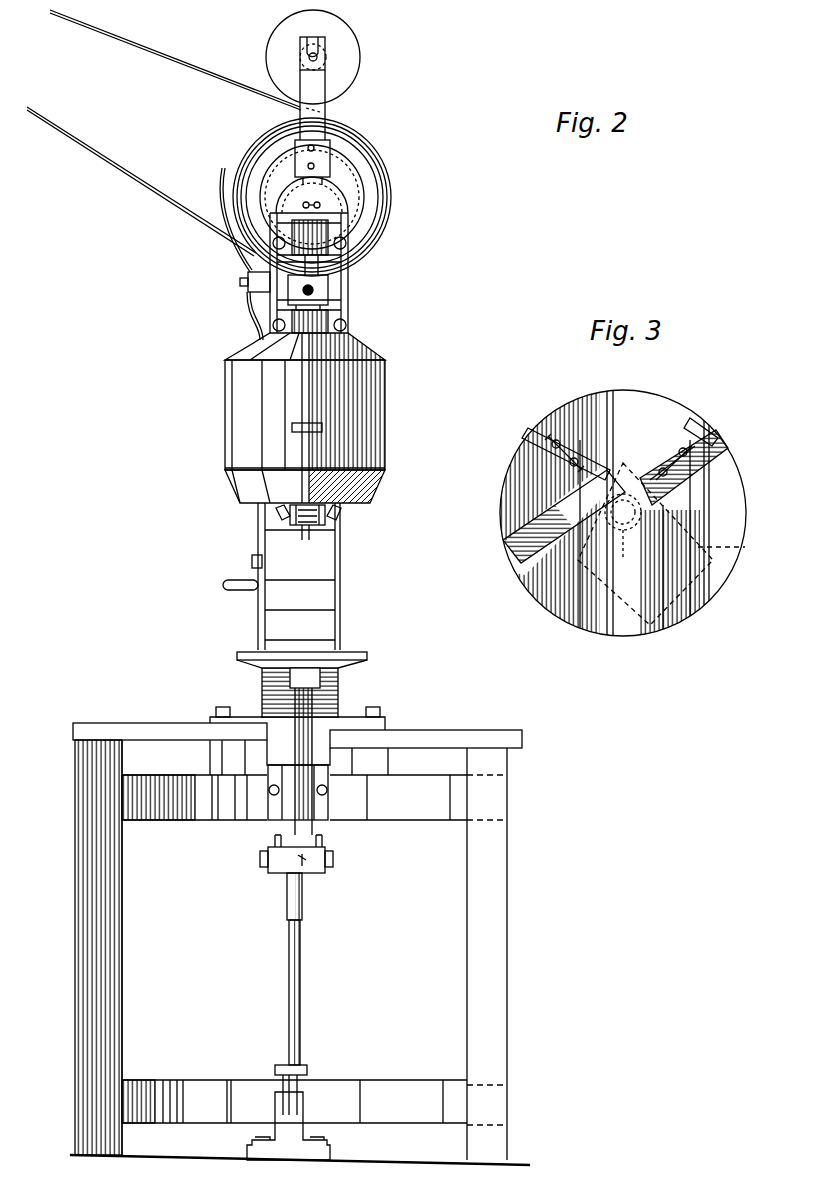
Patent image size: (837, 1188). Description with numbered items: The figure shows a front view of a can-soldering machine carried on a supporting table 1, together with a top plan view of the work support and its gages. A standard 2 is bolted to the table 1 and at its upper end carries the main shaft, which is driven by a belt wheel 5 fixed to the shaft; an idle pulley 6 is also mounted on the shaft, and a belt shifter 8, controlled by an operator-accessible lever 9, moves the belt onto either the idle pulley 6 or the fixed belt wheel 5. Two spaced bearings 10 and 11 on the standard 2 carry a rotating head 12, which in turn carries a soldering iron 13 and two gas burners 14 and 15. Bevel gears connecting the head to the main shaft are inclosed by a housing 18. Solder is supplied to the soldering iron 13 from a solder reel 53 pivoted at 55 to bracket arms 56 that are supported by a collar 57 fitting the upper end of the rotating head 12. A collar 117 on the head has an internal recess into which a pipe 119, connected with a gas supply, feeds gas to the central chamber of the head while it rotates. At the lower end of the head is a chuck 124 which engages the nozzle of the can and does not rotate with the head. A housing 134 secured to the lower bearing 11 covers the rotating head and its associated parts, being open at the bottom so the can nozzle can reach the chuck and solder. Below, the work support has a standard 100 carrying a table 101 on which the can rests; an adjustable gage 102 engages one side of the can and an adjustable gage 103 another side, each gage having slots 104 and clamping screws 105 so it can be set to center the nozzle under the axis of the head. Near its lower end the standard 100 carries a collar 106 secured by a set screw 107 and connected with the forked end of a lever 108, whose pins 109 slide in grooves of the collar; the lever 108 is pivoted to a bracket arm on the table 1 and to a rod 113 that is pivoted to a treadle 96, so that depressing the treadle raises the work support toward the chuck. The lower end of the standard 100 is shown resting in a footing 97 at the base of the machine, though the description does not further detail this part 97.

In FIG. 2, the supporting table 1 is at (421, 740).
In FIG. 2, the standard 2 is at (299, 576).
In FIG. 2, the belt wheel 5 is at (358, 163).
In FIG. 2, the idle pulley 6 is at (172, 64).
In FIG. 2, the belt shifter 8 is at (228, 240).
In FIG. 2, the lever 9 is at (258, 330).
In FIG. 2, the bearing 10 is at (346, 236).
In FIG. 2, the bearing 11 is at (330, 326).
In FIG. 2, the rotating head 12 is at (330, 268).
In FIG. 2, the soldering iron 13 is at (306, 527).
In FIG. 2, the gas burner 14 is at (280, 514).
In FIG. 2, the gas burner 15 is at (340, 515).
In FIG. 2, the housing 18 is at (343, 193).
In FIG. 2, the solder reel 53 is at (285, 30).
In FIG. 2, the pivot 55 is at (318, 57).
In FIG. 2, the bracket arms 56 is at (322, 112).
In FIG. 2, the collar 57 is at (323, 160).
In FIG. 2, the treadle 96 is at (305, 1068).
In FIG. 2, the step bearing 97 is at (290, 1133).
In FIG. 2, the standard 100 is at (304, 913).
In FIG. 2, the table 101 is at (360, 655).
In FIG. 3, the table 101 is at (680, 616).
In FIG. 3, the adjustable gage 102 is at (648, 478).
In FIG. 3, the adjustable gage 103 is at (560, 495).
In FIG. 3, the slots 104 is at (538, 433).
In FIG. 3, the clamping screws 105 is at (572, 452).
In FIG. 2, the collar 106 is at (286, 874).
In FIG. 2, the set screw 107 is at (330, 866).
In FIG. 2, the lever 108 is at (272, 852).
In FIG. 2, the pins 109 is at (264, 866).
In FIG. 2, the rod 113 is at (301, 983).
In FIG. 2, the collar 117 is at (326, 293).
In FIG. 2, the pipe 119 is at (288, 291).
In FIG. 2, the chuck 124 is at (322, 522).
In FIG. 2, the housing 134 is at (378, 373).